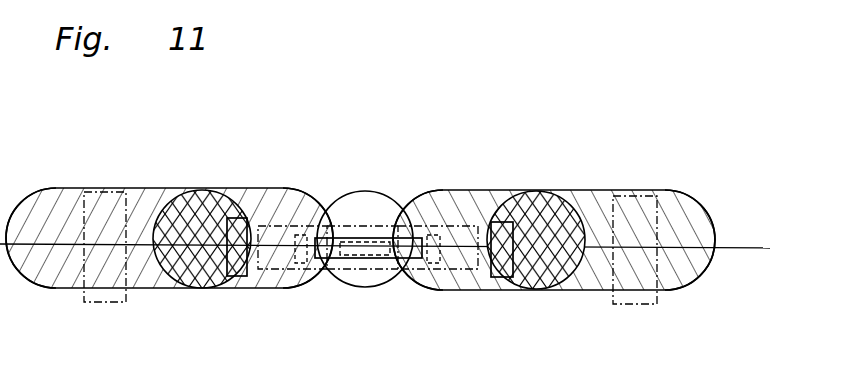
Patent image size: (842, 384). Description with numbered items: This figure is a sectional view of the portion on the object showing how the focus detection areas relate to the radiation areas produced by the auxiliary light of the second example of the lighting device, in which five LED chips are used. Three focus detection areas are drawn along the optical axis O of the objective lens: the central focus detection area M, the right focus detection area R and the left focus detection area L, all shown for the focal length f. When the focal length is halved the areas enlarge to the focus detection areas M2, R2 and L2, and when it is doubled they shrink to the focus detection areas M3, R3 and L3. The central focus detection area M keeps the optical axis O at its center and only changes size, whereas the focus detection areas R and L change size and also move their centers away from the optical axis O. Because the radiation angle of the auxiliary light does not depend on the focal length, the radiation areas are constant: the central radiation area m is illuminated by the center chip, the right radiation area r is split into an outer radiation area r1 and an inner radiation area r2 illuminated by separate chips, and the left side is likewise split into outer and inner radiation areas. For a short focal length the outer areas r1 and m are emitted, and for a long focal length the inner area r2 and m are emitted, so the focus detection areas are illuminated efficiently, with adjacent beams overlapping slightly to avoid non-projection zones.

The radiation area r is at (152, 181).
The radiation area r1 is at (55, 214).
The radiation area r2 is at (280, 209).
The focus detection area R is at (235, 218).
The focus detection area R2 is at (110, 303).
The focus detection area R3 is at (277, 273).
The focus detection area M is at (331, 273).
The focus detection area M2 is at (345, 226).
The focus detection area M3 is at (382, 242).
The radiation area m is at (372, 252).
The optical axis O is at (363, 250).
The focus detection area L is at (493, 278).
The focus detection area L2 is at (622, 305).
The focus detection area L3 is at (432, 262).